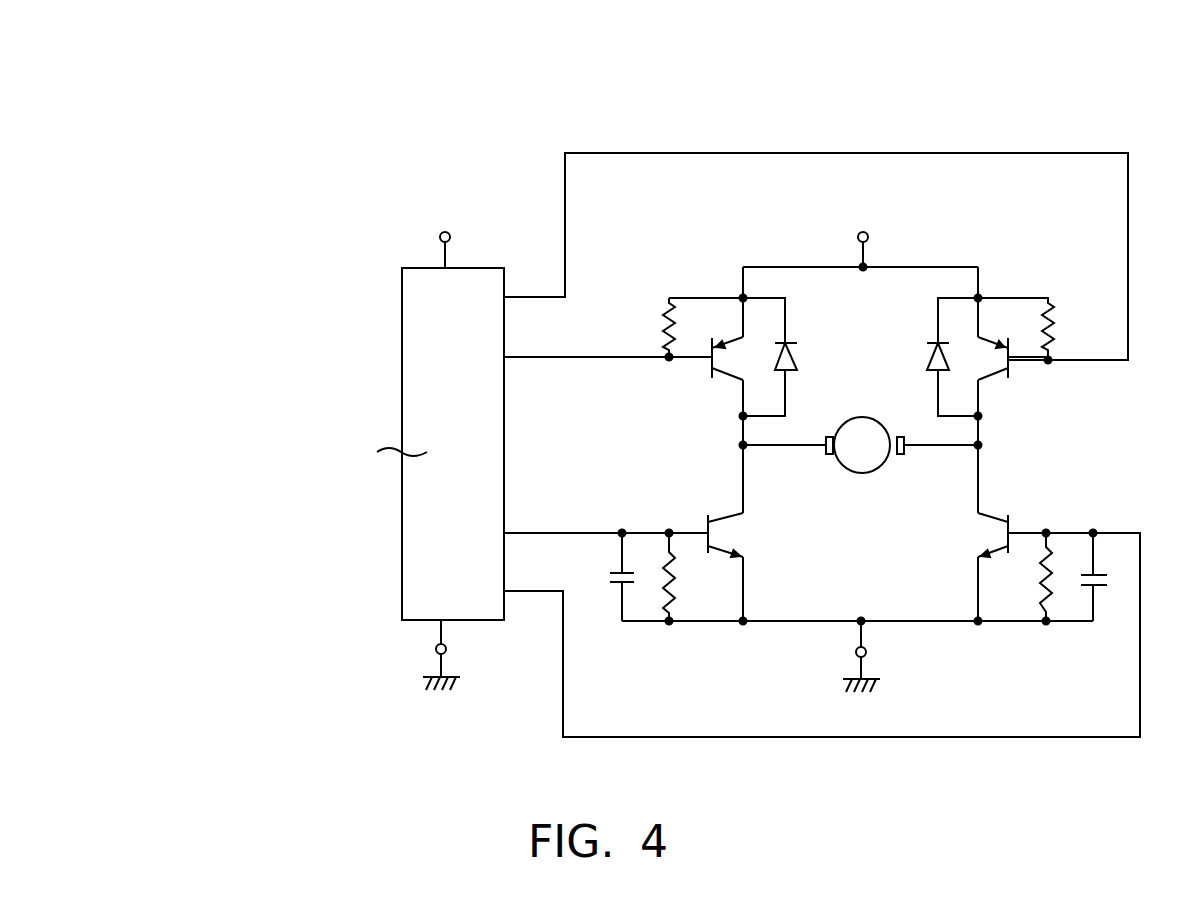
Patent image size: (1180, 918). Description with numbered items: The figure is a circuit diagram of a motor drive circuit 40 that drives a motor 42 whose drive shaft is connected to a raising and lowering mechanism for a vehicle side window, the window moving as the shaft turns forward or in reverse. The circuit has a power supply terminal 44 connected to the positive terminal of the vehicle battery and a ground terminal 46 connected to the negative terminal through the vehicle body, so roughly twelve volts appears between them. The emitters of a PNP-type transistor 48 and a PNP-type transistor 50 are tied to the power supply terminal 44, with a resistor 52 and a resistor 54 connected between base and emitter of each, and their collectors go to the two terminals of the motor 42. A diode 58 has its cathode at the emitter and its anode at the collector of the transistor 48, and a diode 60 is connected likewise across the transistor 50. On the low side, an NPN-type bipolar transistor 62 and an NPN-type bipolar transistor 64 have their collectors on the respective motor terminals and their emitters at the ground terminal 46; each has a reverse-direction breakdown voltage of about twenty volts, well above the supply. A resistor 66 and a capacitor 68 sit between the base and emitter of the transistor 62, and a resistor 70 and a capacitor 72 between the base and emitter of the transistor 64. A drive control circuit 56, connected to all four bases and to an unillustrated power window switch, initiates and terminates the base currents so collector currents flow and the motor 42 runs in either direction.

The motor drive circuit 40 is at (832, 118).
The motor 42 is at (866, 473).
The power supply terminal 44 is at (858, 234).
The ground terminal 46 is at (867, 655).
The PNP-type transistor 48 is at (712, 368).
The PNP-type transistor 50 is at (1008, 370).
The resistor 52 is at (668, 316).
The resistor 54 is at (1058, 312).
The drive control circuit 56 is at (420, 268).
The diode 58 is at (796, 356).
The diode 60 is at (934, 358).
The NPN-type bipolar transistor 62 is at (736, 512).
The NPN-type bipolar transistor 64 is at (978, 512).
The resistor 66 is at (677, 582).
The capacitor 68 is at (612, 573).
The resistor 70 is at (1041, 578).
The capacitor 72 is at (1090, 576).